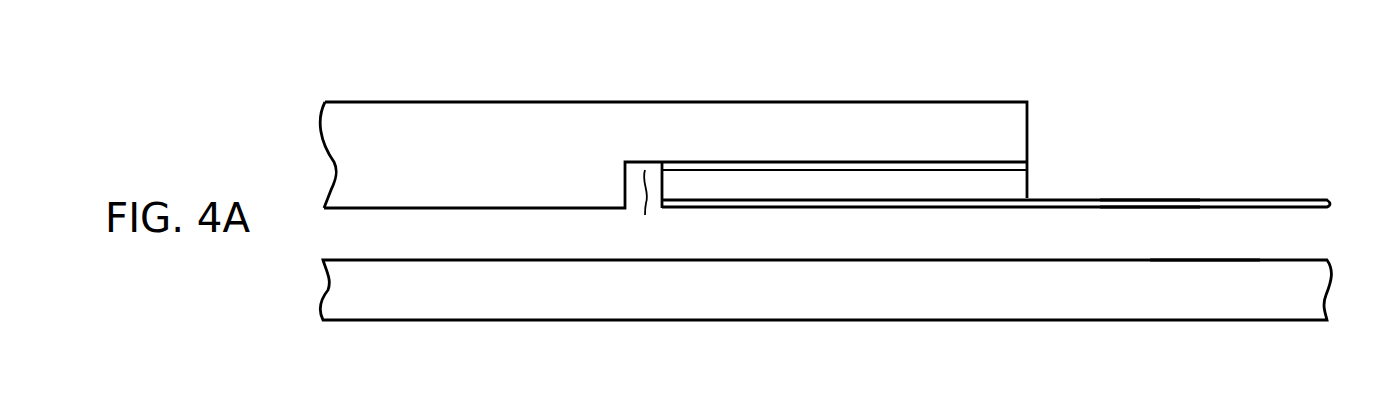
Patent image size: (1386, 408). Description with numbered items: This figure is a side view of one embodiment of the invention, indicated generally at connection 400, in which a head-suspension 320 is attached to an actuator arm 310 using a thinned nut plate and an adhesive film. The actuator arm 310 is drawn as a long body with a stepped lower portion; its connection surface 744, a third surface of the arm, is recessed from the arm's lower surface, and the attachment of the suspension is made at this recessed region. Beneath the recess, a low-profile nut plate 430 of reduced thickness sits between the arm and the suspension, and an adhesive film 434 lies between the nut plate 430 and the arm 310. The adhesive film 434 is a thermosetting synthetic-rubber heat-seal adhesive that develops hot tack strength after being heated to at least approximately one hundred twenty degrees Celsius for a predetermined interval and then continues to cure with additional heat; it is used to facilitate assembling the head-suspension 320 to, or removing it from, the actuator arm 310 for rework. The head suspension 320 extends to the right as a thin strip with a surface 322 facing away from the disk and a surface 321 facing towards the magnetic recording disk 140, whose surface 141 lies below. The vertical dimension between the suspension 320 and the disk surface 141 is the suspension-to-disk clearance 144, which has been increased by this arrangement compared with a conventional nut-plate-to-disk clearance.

The connection 400 is at (1150, 92).
The actuator arm 310 is at (548, 163).
The connection surface 744 is at (644, 205).
The adhesive film 434 is at (1010, 161).
The low-profile nut plate 430 is at (1018, 184).
The head suspension 320 is at (1268, 198).
The surface facing away from disk 322 is at (1154, 198).
The surface facing towards disk 321 is at (1138, 209).
The magnetic recording disk 140 is at (1135, 296).
The surface of the magnetic recording disk 141 is at (1208, 259).
The suspension-to-disk clearance 144 is at (795, 208).